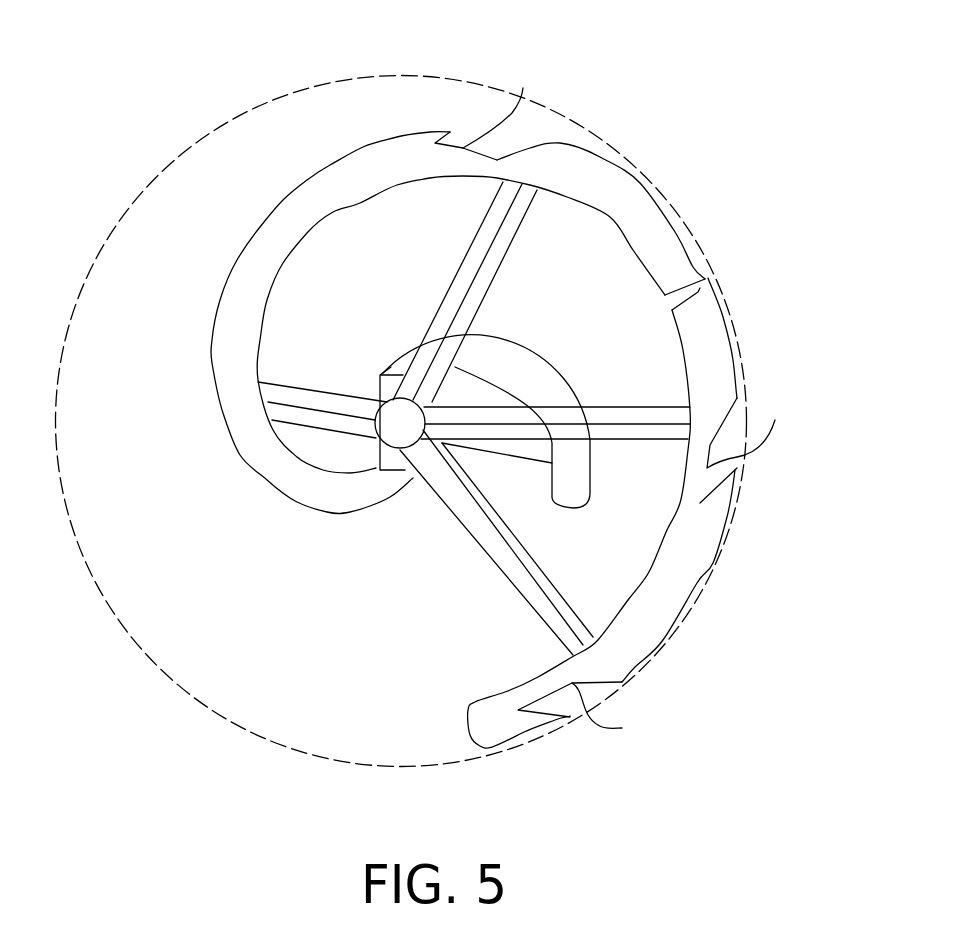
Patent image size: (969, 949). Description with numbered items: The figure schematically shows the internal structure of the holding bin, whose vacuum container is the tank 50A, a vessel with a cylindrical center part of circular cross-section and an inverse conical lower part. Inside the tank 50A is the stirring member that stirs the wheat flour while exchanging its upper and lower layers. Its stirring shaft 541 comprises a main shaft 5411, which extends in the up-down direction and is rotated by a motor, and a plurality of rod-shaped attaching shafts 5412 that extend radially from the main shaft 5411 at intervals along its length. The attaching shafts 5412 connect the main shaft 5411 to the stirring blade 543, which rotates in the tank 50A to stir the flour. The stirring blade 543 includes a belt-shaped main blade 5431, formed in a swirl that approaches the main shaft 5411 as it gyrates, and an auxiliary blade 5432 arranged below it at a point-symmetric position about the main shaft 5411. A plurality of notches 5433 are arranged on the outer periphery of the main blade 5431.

The tank 50A is at (462, 78).
The stirring shaft 541 is at (344, 573).
The main shaft 5411 is at (405, 477).
The attaching shaft 5412 is at (442, 303).
The stirring blade 543 is at (745, 306).
The main blade 5431 is at (593, 172).
The auxiliary blade 5432 is at (527, 358).
The notch 5433 is at (634, 400).